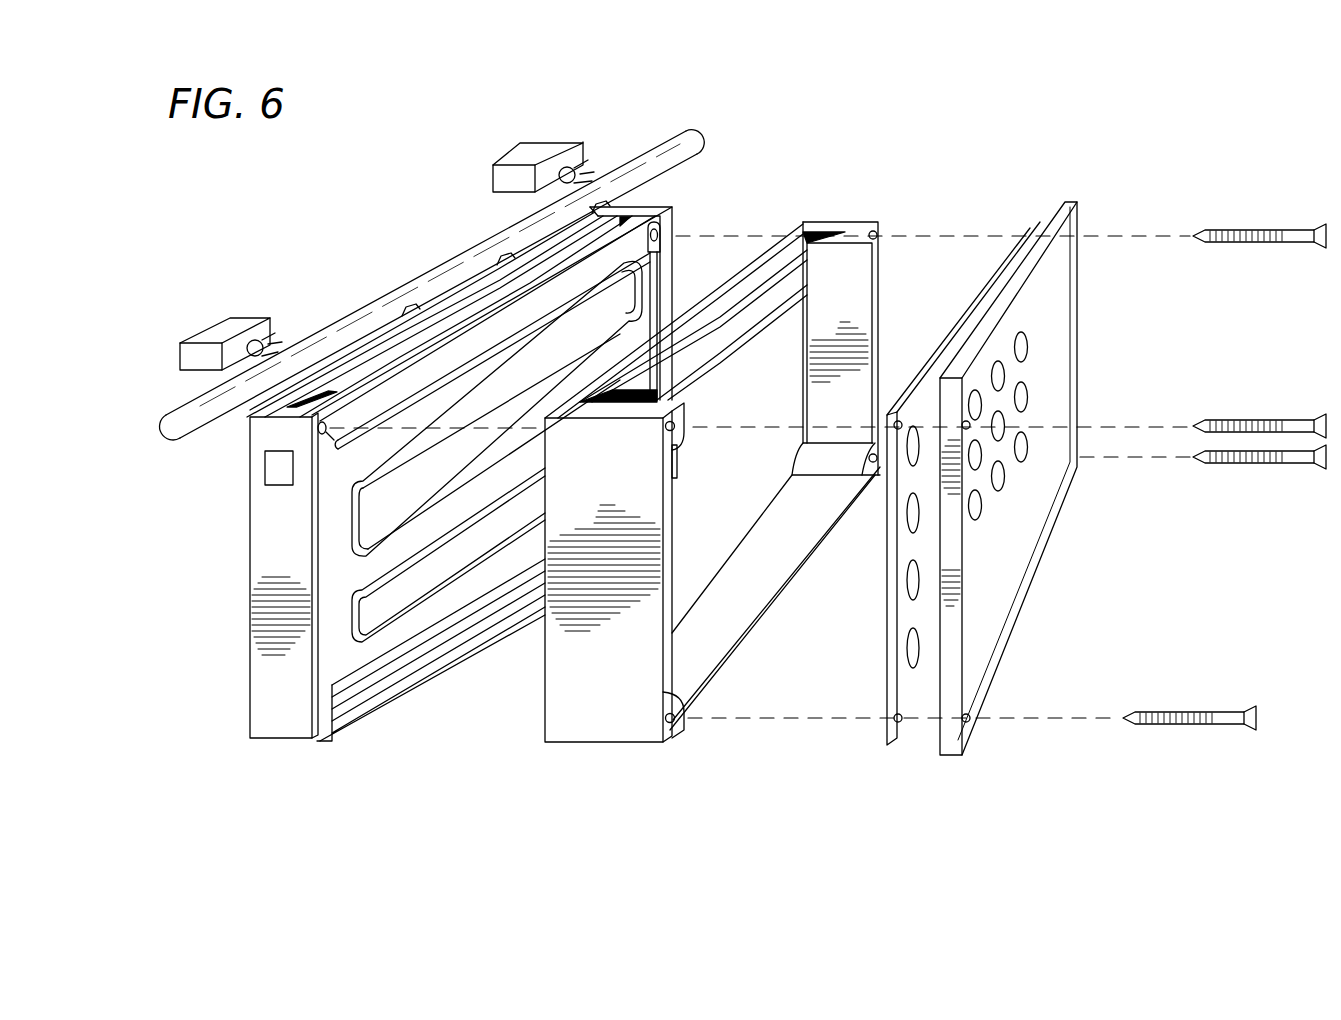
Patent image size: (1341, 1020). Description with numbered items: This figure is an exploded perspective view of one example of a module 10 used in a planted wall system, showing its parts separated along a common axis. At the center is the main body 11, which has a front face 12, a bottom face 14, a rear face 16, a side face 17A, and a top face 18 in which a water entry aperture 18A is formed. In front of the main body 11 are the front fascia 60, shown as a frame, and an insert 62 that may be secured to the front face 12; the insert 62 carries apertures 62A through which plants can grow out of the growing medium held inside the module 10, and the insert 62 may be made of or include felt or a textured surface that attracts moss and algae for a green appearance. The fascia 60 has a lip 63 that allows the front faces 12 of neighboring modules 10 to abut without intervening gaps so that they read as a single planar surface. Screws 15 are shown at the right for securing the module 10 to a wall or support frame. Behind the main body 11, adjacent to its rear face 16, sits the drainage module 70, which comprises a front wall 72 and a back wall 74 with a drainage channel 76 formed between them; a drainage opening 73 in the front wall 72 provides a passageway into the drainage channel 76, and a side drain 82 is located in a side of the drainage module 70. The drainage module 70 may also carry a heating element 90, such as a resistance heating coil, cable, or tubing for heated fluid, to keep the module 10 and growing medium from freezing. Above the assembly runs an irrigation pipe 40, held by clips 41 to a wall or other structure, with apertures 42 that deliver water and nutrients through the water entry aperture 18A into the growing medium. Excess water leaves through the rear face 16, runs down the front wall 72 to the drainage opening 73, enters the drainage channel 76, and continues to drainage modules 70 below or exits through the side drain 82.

The module 10 is at (890, 160).
The main body 11 is at (711, 487).
The front face 12 is at (878, 323).
The bottom face 14 is at (763, 615).
The screws 15 is at (1263, 233).
The rear face 16 is at (545, 677).
The side face 17A is at (562, 725).
The top face 18 is at (862, 222).
The water entry aperture 18A is at (817, 237).
The irrigation pipe 40 is at (666, 146).
The clips 41 is at (207, 332).
The apertures 42 is at (600, 204).
The front fascia 60 is at (1046, 448).
The insert 62 is at (944, 445).
The apertures 62A is at (913, 532).
The lip 63 is at (1075, 215).
The drainage module 70 is at (265, 702).
The front wall 72 is at (393, 367).
The drainage opening 73 is at (367, 667).
The back wall 74 is at (348, 367).
The drainage channel 76 is at (450, 320).
The side drain 82 is at (278, 463).
The heating element 90 is at (352, 520).